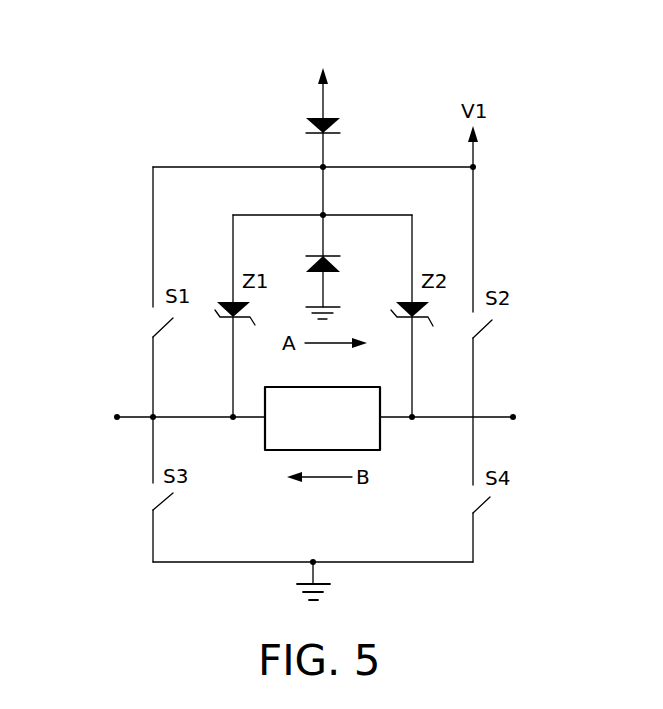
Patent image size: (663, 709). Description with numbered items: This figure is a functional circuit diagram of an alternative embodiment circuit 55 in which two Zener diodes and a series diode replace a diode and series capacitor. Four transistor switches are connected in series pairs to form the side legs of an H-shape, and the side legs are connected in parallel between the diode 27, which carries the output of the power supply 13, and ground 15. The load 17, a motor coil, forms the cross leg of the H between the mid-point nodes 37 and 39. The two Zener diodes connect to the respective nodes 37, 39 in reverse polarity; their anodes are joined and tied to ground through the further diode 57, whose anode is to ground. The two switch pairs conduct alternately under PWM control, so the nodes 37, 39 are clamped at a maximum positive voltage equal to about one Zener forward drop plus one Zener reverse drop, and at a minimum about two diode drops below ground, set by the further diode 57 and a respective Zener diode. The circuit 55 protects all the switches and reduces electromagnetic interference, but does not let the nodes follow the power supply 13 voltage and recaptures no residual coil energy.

The power supply 13 is at (348, 60).
The diode 27 is at (305, 124).
The further diode 57 is at (342, 274).
The load 17 is at (355, 387).
The node 37 is at (116, 417).
The node 39 is at (513, 417).
The ground 15 is at (323, 592).
The alternative embodiment circuit 55 is at (505, 536).